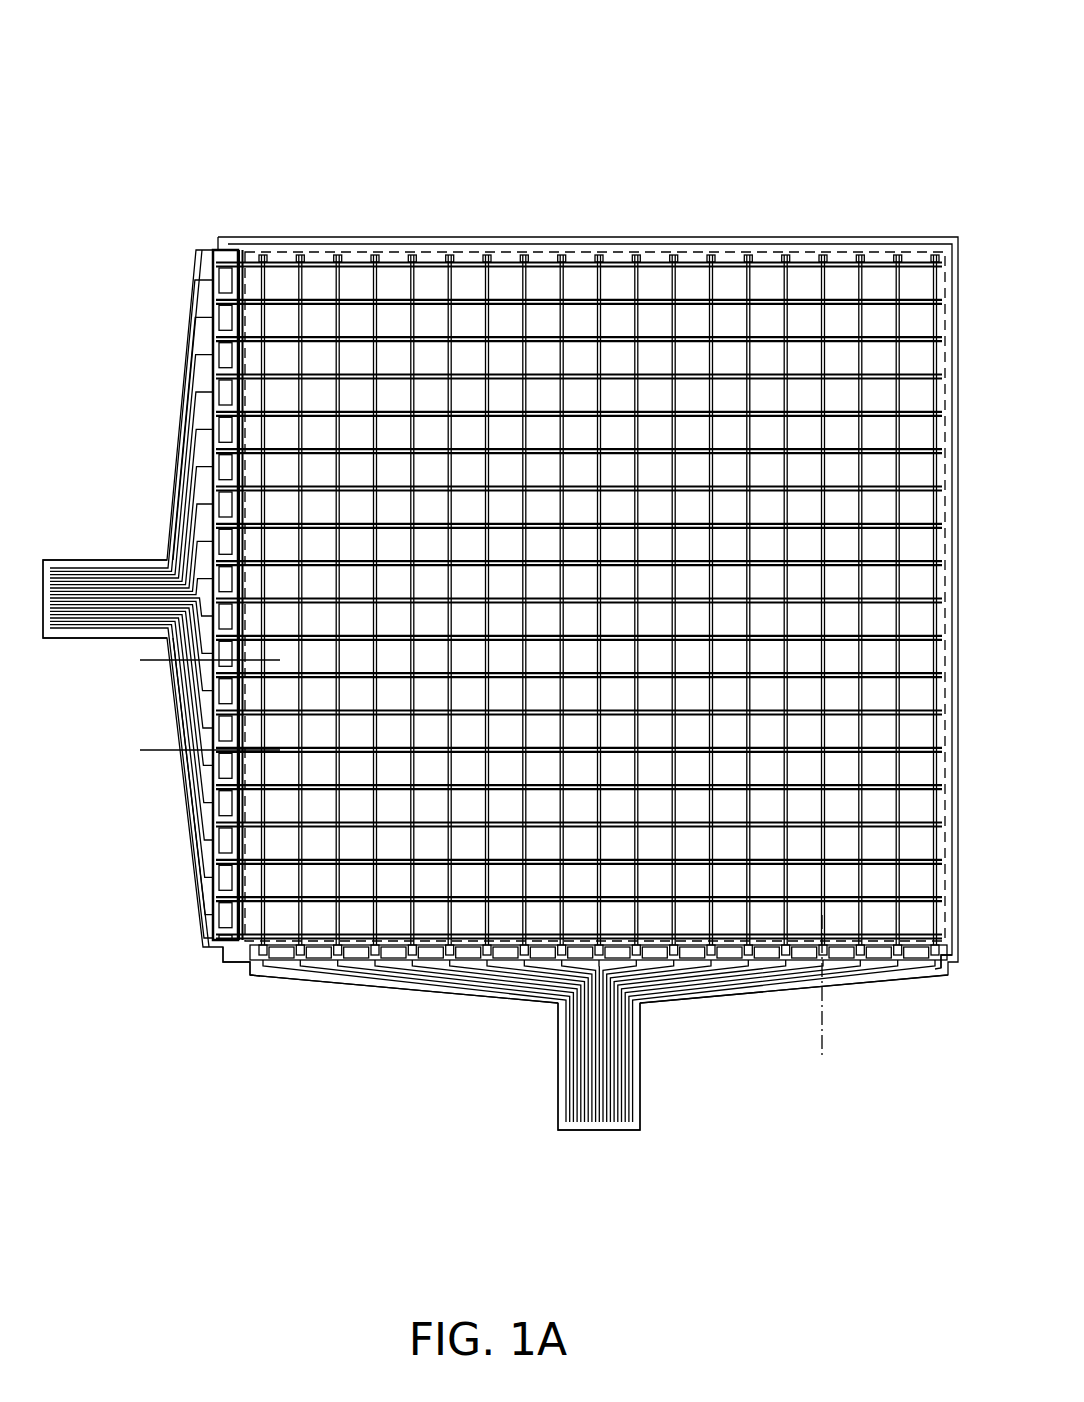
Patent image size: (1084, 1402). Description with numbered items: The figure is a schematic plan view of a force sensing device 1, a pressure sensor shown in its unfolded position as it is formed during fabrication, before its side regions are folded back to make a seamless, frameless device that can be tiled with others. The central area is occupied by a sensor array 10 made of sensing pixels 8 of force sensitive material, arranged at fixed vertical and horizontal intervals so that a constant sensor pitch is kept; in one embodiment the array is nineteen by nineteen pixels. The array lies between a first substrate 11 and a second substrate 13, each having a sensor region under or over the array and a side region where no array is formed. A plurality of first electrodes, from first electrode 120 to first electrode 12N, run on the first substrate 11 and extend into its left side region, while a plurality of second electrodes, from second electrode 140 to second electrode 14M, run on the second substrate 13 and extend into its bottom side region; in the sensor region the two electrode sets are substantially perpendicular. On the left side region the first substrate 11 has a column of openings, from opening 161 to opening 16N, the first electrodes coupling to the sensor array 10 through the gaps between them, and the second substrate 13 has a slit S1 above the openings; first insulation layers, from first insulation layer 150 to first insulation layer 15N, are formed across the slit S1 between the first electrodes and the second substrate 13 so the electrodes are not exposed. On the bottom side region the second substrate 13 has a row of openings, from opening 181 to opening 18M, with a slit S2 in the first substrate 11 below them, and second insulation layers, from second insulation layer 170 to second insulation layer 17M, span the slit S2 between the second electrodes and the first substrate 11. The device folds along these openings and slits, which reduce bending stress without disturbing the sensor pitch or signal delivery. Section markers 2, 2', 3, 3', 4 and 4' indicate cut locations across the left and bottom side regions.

The force sensing device 1 is at (792, 112).
The sensor array 10 is at (660, 250).
The sensing pixel 8 is at (712, 270).
The first electrode 12N is at (250, 256).
The second electrode 140 is at (265, 283).
The second electrode 14M is at (930, 283).
The slit S1 is at (225, 250).
The first insulation layer 15N is at (215, 258).
The opening 16N is at (227, 284).
The second substrate 13 is at (190, 423).
The first substrate 11 is at (65, 645).
The opening 161 is at (227, 915).
The first insulation layer 150 is at (212, 938).
The first electrode 120 is at (245, 975).
The second insulation layer 170 is at (258, 965).
The opening 181 is at (283, 958).
The slit S2 is at (395, 962).
The opening 18M is at (917, 955).
The second insulation layer 17M is at (947, 965).
The section line 2 is at (204, 792).
The section line 2' is at (282, 785).
The section line 3 is at (204, 702).
The section line 3' is at (282, 702).
The section line 4 is at (788, 1059).
The section line 4' is at (786, 979).